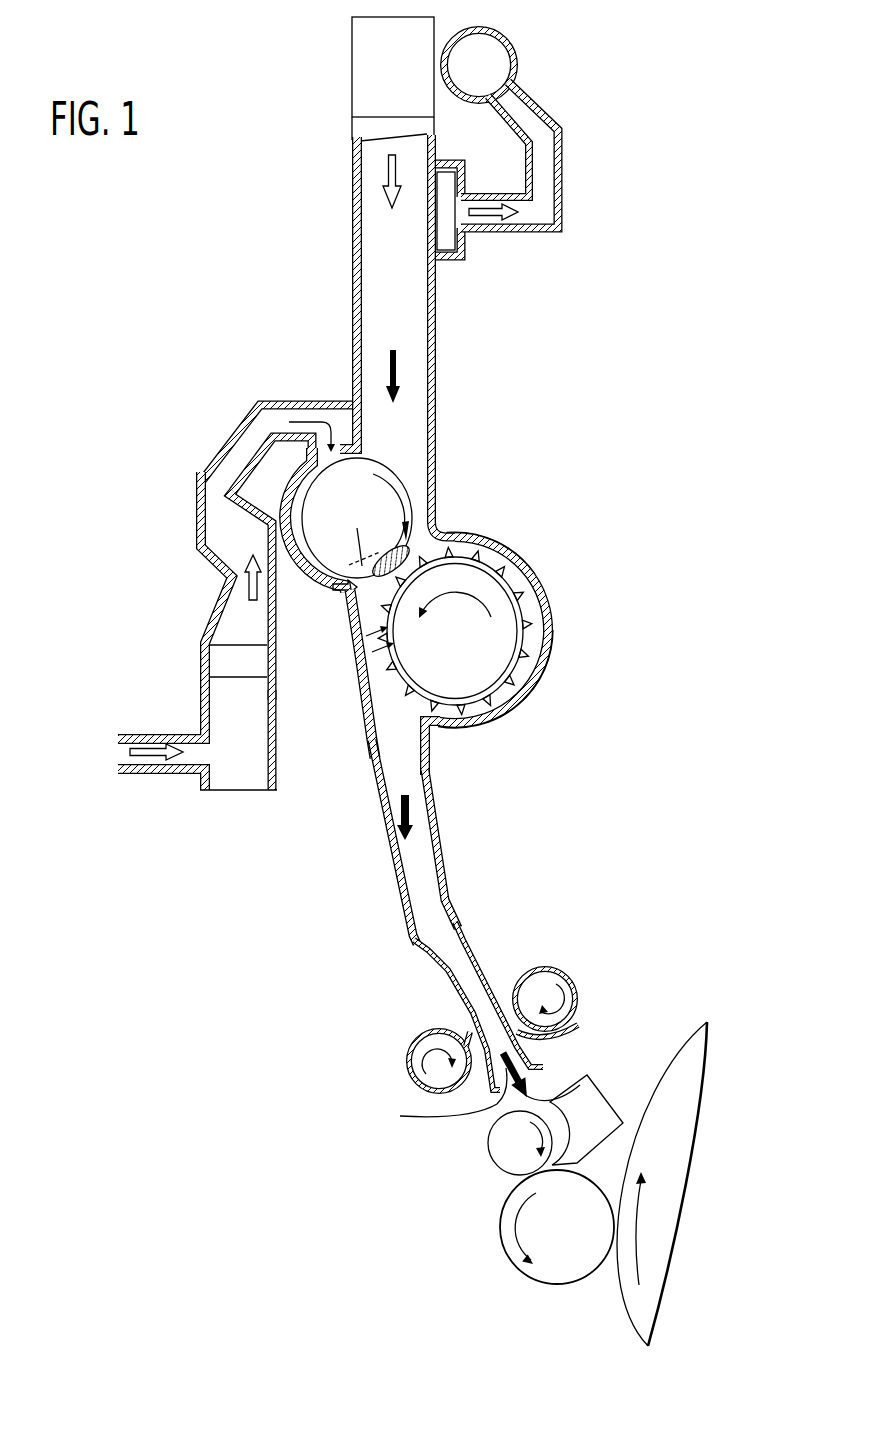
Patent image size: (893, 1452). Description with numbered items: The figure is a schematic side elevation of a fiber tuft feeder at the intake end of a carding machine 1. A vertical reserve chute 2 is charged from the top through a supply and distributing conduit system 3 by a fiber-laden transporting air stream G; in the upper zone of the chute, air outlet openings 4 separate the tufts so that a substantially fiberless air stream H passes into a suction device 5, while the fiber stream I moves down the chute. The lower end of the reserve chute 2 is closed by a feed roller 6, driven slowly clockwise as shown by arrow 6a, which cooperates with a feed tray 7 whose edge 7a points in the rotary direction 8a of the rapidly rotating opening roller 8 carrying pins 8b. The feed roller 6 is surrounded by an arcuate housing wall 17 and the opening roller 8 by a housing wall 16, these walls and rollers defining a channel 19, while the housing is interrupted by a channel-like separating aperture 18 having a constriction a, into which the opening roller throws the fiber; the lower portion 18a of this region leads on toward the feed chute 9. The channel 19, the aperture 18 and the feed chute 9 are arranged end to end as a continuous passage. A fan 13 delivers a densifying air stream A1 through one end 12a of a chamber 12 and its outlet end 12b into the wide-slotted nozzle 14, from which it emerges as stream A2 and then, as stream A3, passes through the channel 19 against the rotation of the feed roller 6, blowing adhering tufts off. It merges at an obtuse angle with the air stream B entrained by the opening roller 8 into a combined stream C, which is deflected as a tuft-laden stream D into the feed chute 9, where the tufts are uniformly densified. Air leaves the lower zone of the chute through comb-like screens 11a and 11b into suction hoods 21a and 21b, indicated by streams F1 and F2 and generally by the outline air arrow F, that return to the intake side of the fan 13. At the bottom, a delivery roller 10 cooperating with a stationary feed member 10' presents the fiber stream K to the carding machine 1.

The carding machine 1 is at (680, 1018).
The reserve chute 2 is at (380, 262).
The supply and distributing conduit system 3 is at (376, 68).
The air outlet openings 4 is at (442, 207).
The suction device 5 is at (486, 60).
The feed roller 6 is at (410, 484).
The direction of rotation of feed roller 6a is at (400, 500).
The feed tray 7 is at (445, 534).
The edge of feed tray 7a is at (495, 530).
The opening roller 8 is at (498, 662).
The direction of rotation of opening roller 8a is at (490, 592).
The pins 8b is at (555, 612).
The feed chute 9 is at (425, 888).
The delivery roller 10 is at (488, 1143).
The stationary feed member 10' is at (626, 1185).
The comb-like screen 11a is at (402, 1116).
The comb-like screen 11b is at (530, 1078).
The chamber 12 is at (228, 527).
The end of chamber 12a is at (225, 660).
The outlet end of chamber 12b is at (272, 418).
The fan 13 is at (240, 772).
The constriction 14 is at (302, 397).
The housing wall 16 is at (540, 690).
The housing wall 17 is at (306, 562).
The separating aperture 18 is at (378, 652).
The chute wall lower section 18a is at (364, 698).
The channel 19 is at (480, 714).
The air removal chamber 21a is at (420, 1030).
The air removal chamber 21b is at (530, 970).
The densifying air stream A1 is at (248, 597).
The densifying air stream A2 is at (337, 437).
The densifying air stream A3 is at (366, 635).
The air stream B is at (455, 619).
The combined air stream C is at (392, 622).
The fiber tuft-laden air stream D is at (425, 808).
The air stream F is at (158, 752).
The flow direction F1 is at (420, 1056).
The flow direction F2 is at (556, 1000).
The fiber-laden transporting air stream G is at (386, 170).
The substantially fiberless air stream H is at (490, 216).
The fiber stream I is at (384, 360).
The fiber stream K is at (576, 1064).
The constriction a is at (402, 643).